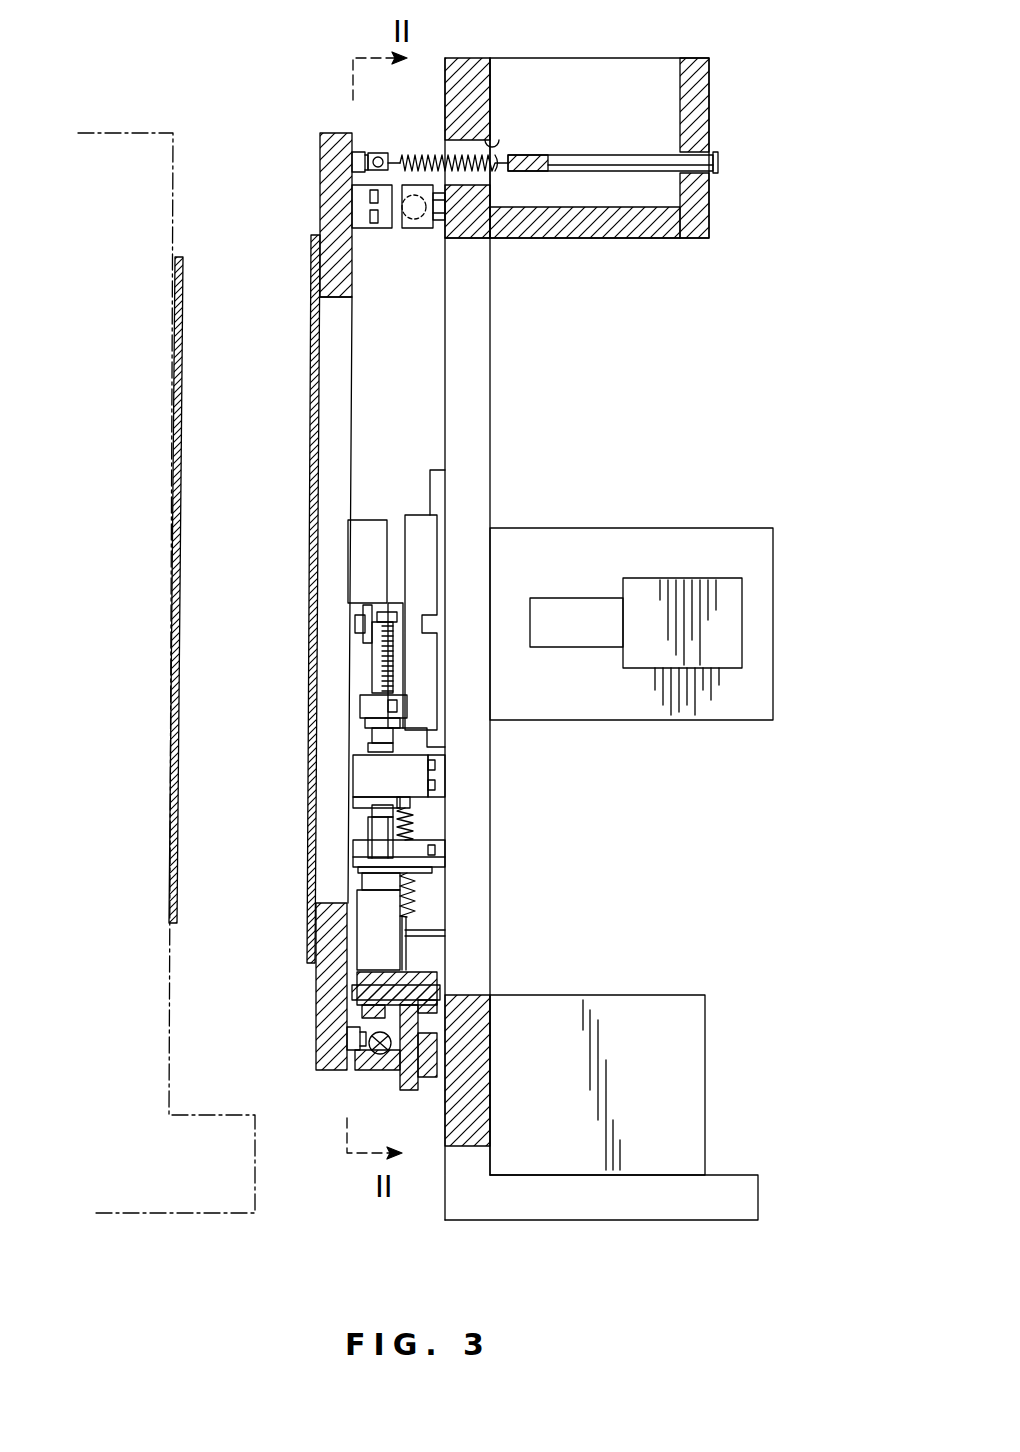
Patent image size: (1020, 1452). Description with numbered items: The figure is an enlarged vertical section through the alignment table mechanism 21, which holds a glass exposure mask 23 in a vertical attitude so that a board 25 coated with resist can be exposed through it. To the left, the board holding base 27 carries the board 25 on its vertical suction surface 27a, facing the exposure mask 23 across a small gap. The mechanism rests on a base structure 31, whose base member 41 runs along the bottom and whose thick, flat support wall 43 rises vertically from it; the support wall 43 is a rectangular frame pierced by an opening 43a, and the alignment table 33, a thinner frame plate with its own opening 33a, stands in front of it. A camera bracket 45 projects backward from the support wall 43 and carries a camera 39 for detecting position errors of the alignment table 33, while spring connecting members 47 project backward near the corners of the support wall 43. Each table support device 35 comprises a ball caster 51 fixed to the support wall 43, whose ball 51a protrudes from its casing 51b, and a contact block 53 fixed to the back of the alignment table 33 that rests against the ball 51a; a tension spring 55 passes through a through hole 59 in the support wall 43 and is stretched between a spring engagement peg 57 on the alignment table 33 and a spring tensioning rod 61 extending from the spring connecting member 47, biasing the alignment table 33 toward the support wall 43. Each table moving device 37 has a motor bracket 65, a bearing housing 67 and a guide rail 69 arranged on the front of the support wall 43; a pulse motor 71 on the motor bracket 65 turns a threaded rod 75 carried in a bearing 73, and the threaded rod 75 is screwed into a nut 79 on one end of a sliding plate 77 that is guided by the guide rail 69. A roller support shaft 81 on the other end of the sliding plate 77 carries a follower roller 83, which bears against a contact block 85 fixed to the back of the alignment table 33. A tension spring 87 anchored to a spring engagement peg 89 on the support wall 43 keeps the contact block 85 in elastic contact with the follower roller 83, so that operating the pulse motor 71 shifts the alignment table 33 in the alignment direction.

The alignment table mechanism 21 is at (283, 175).
The exposure mask 23 is at (312, 340).
The board 25 is at (184, 398).
The board holding base 27 is at (147, 133).
The vertical suction surface 27a is at (173, 195).
The base structure 31 is at (447, 1221).
The alignment table 33 is at (330, 136).
The opening 33a is at (337, 372).
The table support device 35 is at (423, 152).
The table moving device 37 is at (425, 810).
The camera 39 is at (640, 655).
The base member 41 is at (735, 1178).
The support wall 43 is at (485, 95).
The opening 43a is at (467, 240).
The camera bracket 45 is at (572, 528).
The spring connecting member 47 is at (700, 82).
The ball caster 51 is at (417, 228).
The ball 51a is at (392, 208).
The casing 51b is at (443, 222).
The contact block 53 is at (382, 228).
The tension spring 55 is at (495, 175).
The spring engagement peg 57 is at (378, 156).
The through hole 59 is at (493, 148).
The spring tensioning rod 61 is at (611, 155).
The motor bracket 65 is at (440, 873).
The bearing housing 67 is at (440, 775).
The guide rail 69 is at (437, 470).
The pulse motor 71 is at (405, 945).
The bearing 73 is at (358, 800).
The threaded rod 75 is at (372, 660).
The sliding plate 77 is at (413, 530).
The nut 79 is at (365, 708).
The roller support shaft 81 is at (397, 617).
The follower roller 83 is at (358, 612).
The contact block 85 is at (360, 535).
The tension spring 87 is at (415, 830).
The spring engagement peg 89 is at (428, 925).